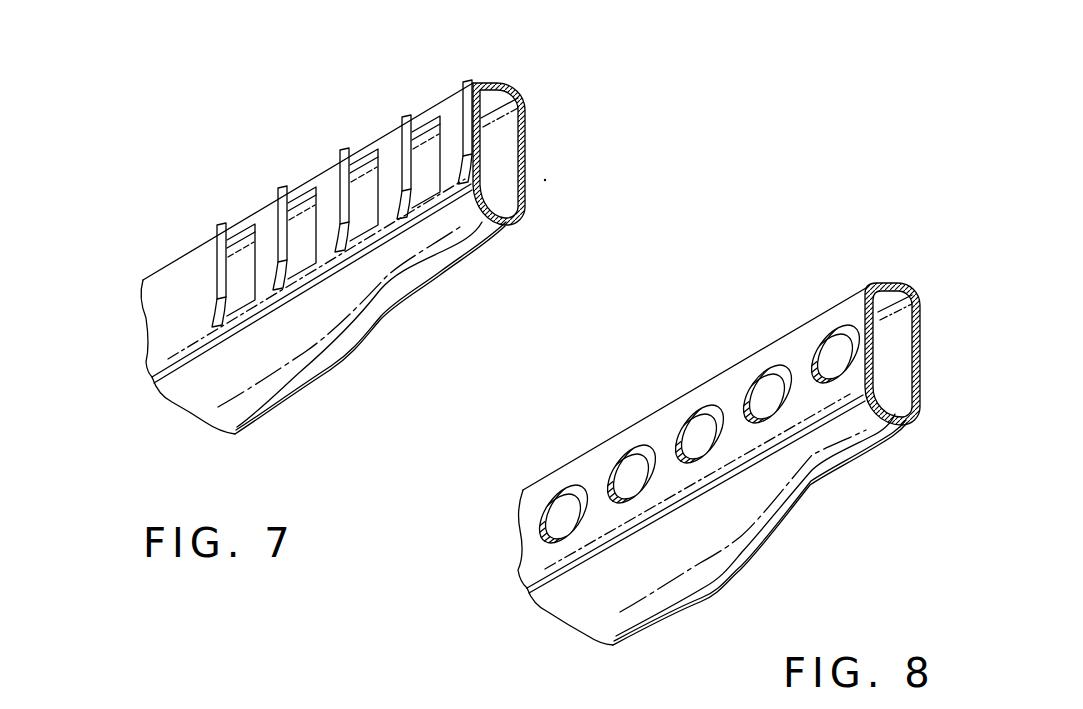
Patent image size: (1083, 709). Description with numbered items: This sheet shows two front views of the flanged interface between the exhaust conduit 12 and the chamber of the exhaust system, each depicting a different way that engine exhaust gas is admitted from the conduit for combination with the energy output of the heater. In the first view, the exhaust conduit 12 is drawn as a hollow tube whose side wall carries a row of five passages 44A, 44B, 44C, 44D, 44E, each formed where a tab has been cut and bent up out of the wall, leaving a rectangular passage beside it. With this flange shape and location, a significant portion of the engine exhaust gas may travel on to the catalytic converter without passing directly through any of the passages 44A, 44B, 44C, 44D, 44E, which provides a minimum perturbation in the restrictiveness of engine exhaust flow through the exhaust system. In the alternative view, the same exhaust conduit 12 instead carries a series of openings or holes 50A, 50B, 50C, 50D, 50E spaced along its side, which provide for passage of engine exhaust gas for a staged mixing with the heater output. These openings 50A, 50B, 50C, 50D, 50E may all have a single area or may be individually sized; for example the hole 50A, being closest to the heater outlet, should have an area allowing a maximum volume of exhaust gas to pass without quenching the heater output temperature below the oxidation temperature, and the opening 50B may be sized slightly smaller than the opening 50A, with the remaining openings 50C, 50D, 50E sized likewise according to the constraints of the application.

In FIG. 7, the exhaust conduit 12 is at (207, 387).
In FIG. 8, the exhaust conduit 12 is at (577, 602).
In FIG. 7, the passage 44A is at (222, 277).
In FIG. 7, the passage 44B is at (286, 218).
In FIG. 7, the passage 44C is at (348, 183).
In FIG. 7, the passage 44D is at (407, 165).
In FIG. 7, the passage 44E is at (468, 135).
In FIG. 8, the opening 50A is at (568, 500).
In FIG. 8, the opening 50B is at (633, 458).
In FIG. 8, the opening 50C is at (700, 418).
In FIG. 8, the opening 50D is at (768, 378).
In FIG. 8, the opening 50E is at (836, 338).